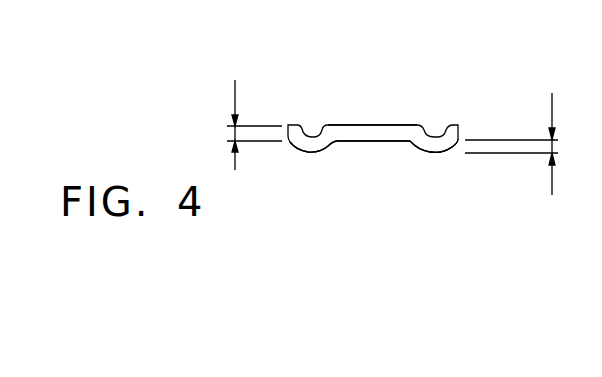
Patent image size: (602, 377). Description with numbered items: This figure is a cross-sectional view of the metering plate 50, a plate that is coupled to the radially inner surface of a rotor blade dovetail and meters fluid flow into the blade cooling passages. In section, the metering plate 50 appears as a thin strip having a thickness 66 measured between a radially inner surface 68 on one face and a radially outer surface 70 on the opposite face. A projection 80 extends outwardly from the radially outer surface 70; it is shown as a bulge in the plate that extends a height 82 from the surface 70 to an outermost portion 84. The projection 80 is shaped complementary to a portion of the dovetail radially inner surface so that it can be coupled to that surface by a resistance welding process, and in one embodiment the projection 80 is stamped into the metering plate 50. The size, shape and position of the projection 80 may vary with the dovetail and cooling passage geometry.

The metering plate 50 is at (302, 50).
The thickness 66 is at (237, 97).
The radially inner surface 68 is at (383, 124).
The radially outer surface 70 is at (365, 142).
The projection 80 is at (438, 151).
The height 82 is at (551, 104).
The portion 84 is at (310, 158).